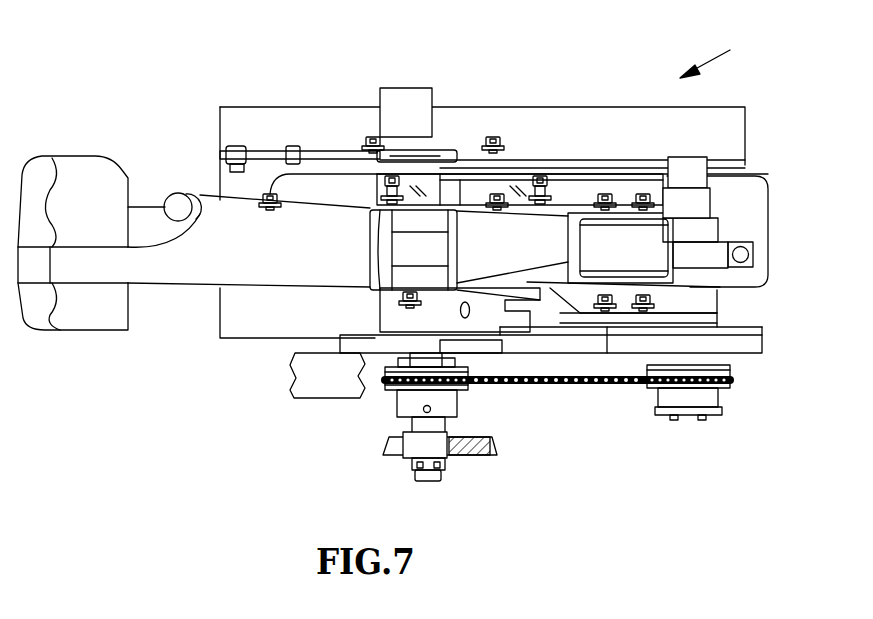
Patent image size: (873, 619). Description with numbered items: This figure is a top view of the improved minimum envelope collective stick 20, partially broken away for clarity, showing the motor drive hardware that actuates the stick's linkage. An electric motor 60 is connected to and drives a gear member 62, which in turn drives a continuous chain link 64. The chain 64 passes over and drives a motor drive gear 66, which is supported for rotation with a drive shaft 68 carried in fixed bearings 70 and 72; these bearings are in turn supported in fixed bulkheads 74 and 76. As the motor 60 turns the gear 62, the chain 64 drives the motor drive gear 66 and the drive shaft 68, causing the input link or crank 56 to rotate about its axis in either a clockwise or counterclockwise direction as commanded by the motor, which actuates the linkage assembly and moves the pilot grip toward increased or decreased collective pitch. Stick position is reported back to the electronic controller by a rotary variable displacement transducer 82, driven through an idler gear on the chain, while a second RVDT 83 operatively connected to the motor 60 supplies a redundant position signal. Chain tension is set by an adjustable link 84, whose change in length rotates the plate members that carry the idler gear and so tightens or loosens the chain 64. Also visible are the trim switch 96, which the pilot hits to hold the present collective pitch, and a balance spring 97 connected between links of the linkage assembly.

The collective stick 20 is at (720, 58).
The input link or crank 56 is at (488, 305).
The electric motor 60 is at (700, 215).
The gear member 62 is at (728, 385).
The continuous chain link 64 is at (578, 386).
The motor drive gear 66 is at (468, 385).
The drive shaft 68 is at (430, 358).
The fixed bearing 70 is at (455, 343).
The fixed bearing 72 is at (393, 446).
The fixed bulkhead 74 is at (486, 447).
The fixed bulkhead 76 is at (363, 343).
The rotary variable displacement transducer (RVDT) 82 is at (420, 124).
The RVDT 83 is at (701, 184).
The adjustable link 84 is at (330, 150).
The trim switch 96 is at (176, 200).
The balance spring 97 is at (522, 186).